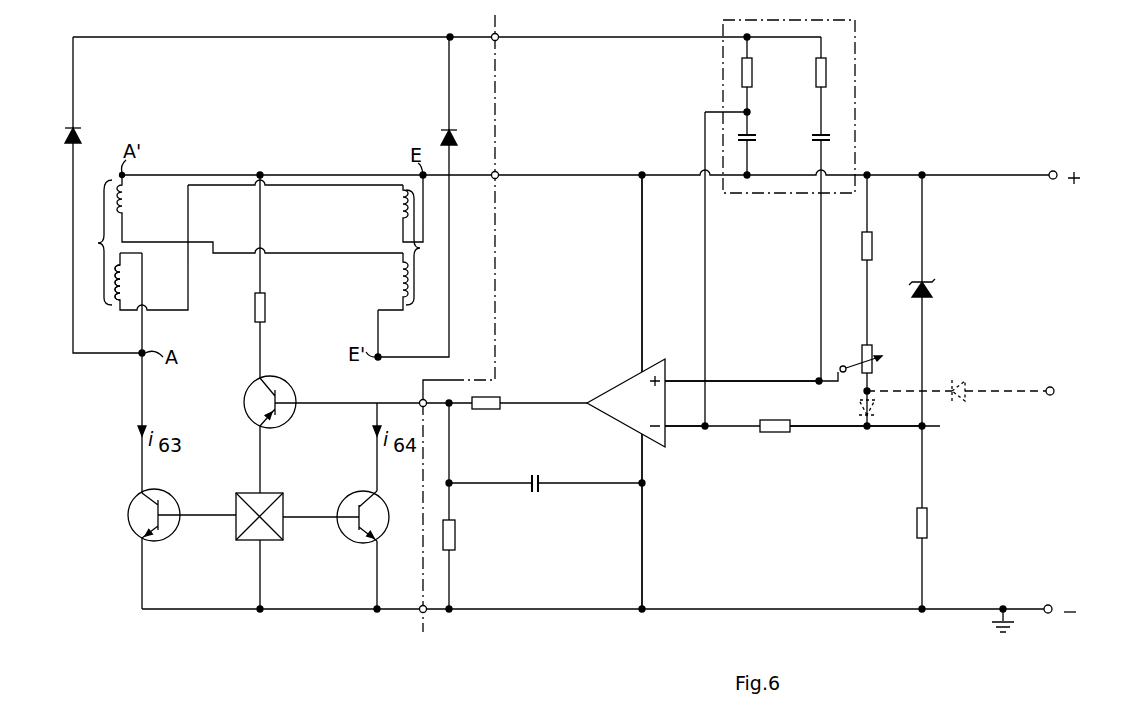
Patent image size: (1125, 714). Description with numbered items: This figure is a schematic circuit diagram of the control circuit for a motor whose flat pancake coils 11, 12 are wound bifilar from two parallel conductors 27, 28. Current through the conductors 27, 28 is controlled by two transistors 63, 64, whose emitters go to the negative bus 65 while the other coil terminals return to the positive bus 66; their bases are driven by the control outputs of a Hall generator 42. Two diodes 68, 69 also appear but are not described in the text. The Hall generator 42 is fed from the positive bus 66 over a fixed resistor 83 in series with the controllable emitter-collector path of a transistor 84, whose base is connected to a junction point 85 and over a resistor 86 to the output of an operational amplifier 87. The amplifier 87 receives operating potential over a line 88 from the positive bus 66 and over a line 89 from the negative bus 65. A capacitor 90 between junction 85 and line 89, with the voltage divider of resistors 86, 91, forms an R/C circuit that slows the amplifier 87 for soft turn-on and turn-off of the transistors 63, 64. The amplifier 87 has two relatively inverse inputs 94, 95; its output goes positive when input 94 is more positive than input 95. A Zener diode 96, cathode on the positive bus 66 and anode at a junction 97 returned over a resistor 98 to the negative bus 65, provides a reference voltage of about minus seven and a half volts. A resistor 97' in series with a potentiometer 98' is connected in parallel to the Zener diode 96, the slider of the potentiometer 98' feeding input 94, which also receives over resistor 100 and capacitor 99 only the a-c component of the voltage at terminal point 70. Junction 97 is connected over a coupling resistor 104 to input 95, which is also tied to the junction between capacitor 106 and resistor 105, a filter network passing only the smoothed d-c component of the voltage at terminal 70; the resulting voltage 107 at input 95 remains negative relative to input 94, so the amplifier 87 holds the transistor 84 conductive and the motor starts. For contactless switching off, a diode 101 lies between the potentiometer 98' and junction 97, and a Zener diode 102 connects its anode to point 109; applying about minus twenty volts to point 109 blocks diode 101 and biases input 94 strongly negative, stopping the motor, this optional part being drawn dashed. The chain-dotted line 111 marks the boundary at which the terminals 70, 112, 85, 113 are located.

The pancake coil 11 is at (230, 242).
The pancake coil 12 is at (416, 242).
The conductor 27 is at (143, 281).
The conductor 28 is at (378, 327).
The Hall generator 42 is at (278, 525).
The transistor 63 is at (140, 505).
The transistor 64 is at (352, 503).
The negative terminal 65 is at (1050, 606).
The positive terminal 66 is at (1055, 172).
The diode 68 is at (77, 129).
The diode 69 is at (444, 134).
The terminal point 70 is at (498, 35).
The fixed resistor 83 is at (265, 305).
The transistor 84 is at (283, 392).
The junction point 85 is at (420, 400).
The resistor 86 is at (490, 400).
The operational amplifier 87 is at (606, 393).
The line 88 is at (642, 270).
The line 89 is at (642, 560).
The capacitor 90 is at (538, 492).
The resistor 91 is at (455, 538).
The amplifier input 94 is at (688, 380).
The amplifier input 95 is at (688, 428).
The Zener diode 96 is at (932, 290).
The junction 97 is at (879, 431).
The resistor 97' is at (888, 248).
The resistor 98 is at (940, 523).
The potentiometer 98' is at (877, 355).
The capacitor 99 is at (830, 138).
The resistor 100 is at (826, 72).
The diode 101 is at (858, 410).
The Zener diode 102 is at (968, 385).
The coupling resistor 104 is at (772, 432).
The resistor 105 is at (752, 72).
The capacitor 106 is at (754, 138).
The voltage at input 95 107 is at (850, 40).
The point 109 is at (1052, 388).
The chain-dotted line 111 is at (496, 72).
The terminal 112 is at (498, 173).
The terminal 113 is at (426, 612).